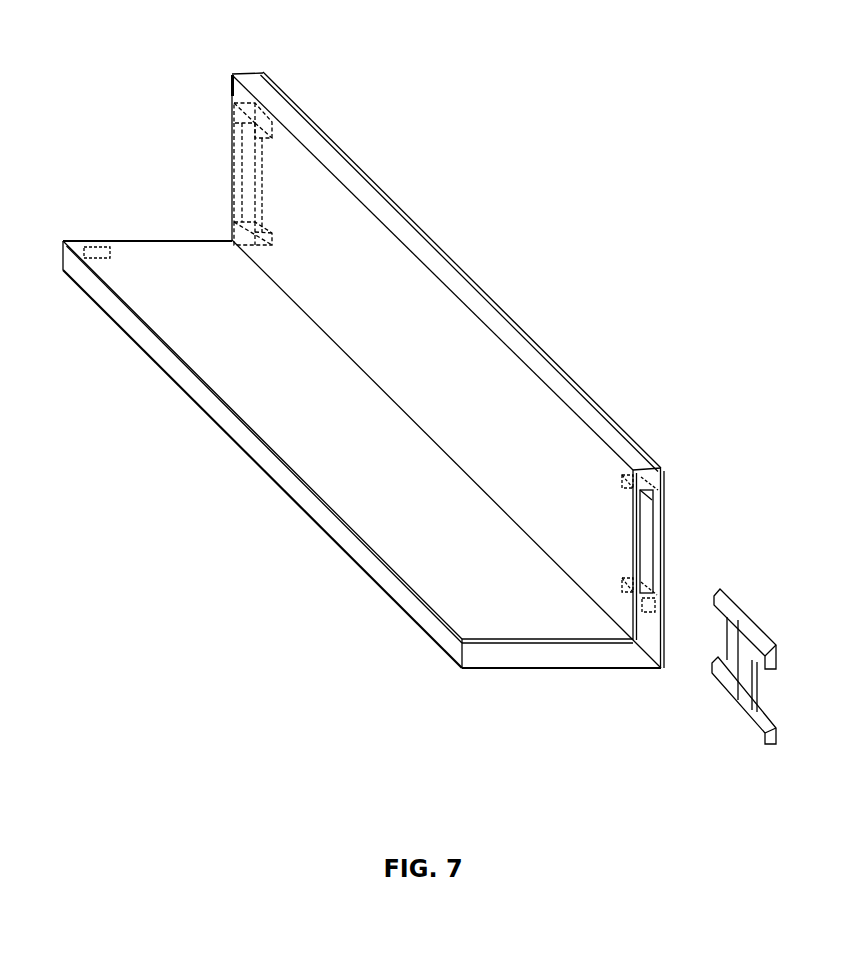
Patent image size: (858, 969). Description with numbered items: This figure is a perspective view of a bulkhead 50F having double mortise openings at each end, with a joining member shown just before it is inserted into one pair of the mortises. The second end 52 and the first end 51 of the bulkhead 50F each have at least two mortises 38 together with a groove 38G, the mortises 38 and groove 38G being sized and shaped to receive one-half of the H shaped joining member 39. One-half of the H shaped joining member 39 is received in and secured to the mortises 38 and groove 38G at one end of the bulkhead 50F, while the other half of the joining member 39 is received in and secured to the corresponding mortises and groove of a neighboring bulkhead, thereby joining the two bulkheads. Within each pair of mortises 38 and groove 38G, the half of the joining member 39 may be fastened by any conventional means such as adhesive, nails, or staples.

The bulkhead 50F is at (492, 286).
The second end 52 is at (263, 71).
The first end 51 is at (662, 460).
The mortises 38 is at (247, 125).
The groove 38G is at (262, 176).
The H shaped joining member 39 is at (762, 616).